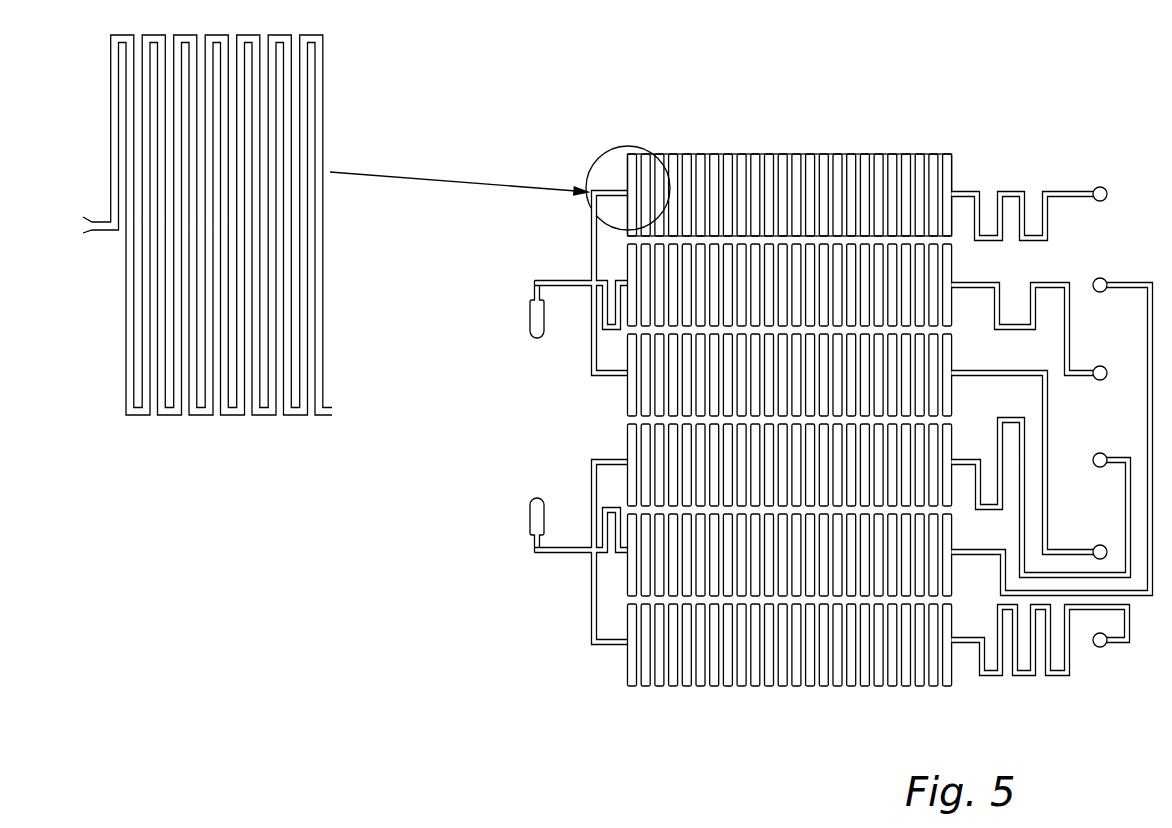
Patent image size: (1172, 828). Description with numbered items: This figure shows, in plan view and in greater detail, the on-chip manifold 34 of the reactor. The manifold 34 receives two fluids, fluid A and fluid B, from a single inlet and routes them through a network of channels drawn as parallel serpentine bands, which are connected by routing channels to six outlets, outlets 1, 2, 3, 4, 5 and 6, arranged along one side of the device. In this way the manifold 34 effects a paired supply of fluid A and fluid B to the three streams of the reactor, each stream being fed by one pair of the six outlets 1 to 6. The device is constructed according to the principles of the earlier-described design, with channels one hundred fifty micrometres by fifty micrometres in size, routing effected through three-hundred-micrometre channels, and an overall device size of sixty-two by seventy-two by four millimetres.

The outlet 1 is at (1105, 189).
The outlet 2 is at (1106, 280).
The outlet 3 is at (1103, 367).
The outlet 4 is at (1097, 454).
The outlet 5 is at (1096, 546).
The outlet 6 is at (1100, 647).
The manifold 34 is at (508, 708).